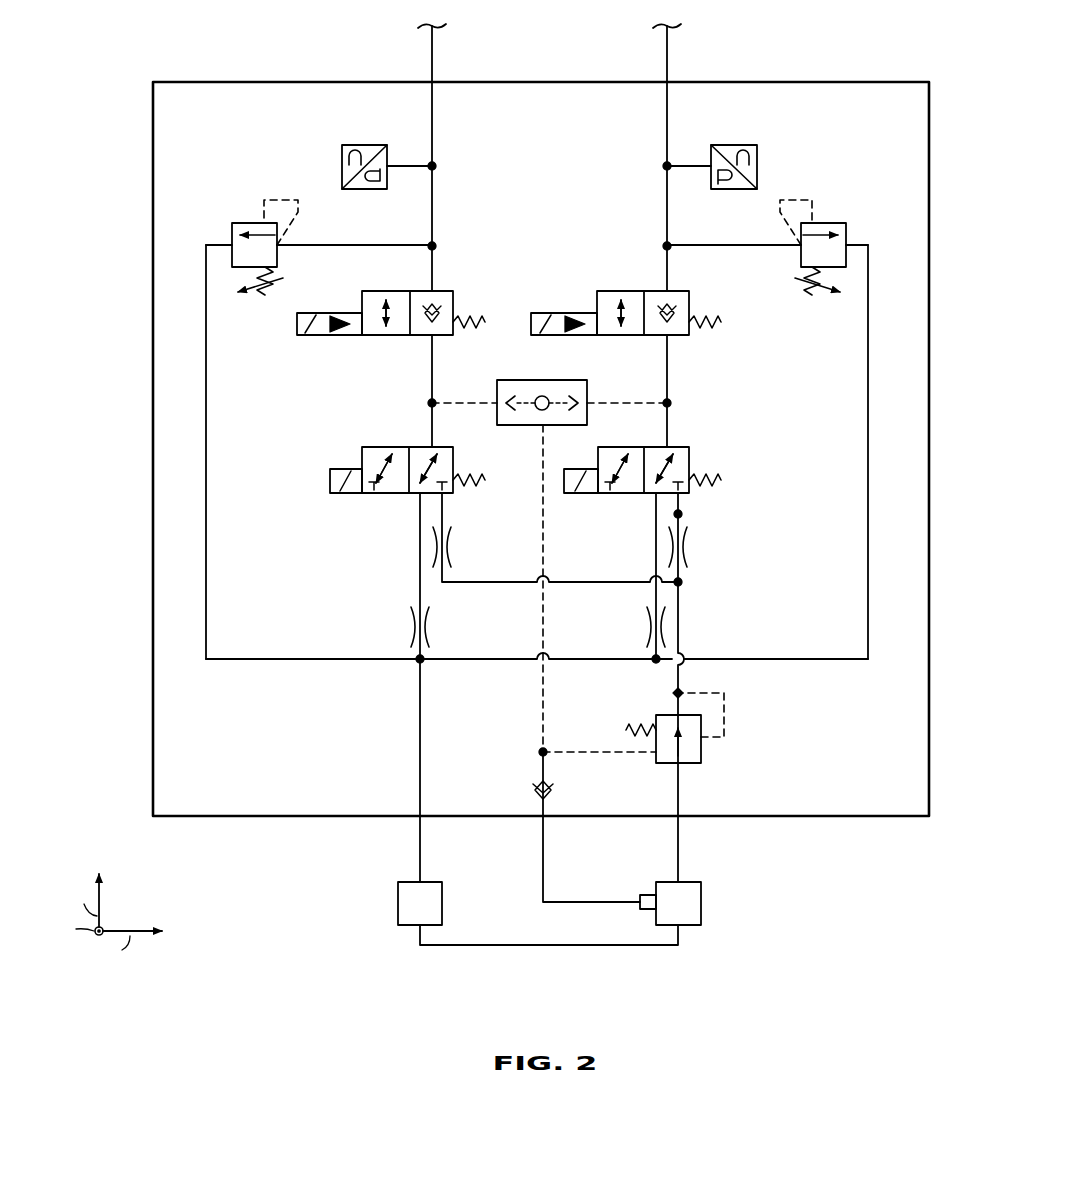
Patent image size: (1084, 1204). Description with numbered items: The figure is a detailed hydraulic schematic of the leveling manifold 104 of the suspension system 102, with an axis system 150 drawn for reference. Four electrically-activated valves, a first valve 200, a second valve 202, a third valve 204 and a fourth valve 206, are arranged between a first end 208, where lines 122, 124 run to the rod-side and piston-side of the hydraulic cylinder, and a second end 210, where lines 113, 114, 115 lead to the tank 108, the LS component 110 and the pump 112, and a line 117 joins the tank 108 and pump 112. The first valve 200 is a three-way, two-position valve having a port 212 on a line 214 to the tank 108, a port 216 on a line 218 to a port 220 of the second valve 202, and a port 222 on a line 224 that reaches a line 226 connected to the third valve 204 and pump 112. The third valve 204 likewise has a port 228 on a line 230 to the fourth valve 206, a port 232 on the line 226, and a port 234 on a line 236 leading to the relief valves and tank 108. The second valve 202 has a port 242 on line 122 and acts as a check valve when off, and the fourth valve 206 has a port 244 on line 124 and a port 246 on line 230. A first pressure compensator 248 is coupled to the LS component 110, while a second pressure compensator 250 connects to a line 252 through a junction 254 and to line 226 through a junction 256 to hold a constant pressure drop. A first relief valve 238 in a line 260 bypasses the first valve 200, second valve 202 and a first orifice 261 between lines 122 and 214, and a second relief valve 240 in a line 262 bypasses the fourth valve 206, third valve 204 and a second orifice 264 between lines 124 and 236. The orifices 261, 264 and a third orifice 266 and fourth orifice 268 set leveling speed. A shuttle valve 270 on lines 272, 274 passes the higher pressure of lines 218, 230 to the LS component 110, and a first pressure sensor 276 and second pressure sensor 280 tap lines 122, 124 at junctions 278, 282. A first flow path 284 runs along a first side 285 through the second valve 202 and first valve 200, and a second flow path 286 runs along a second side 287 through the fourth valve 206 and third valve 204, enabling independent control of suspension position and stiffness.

The suspension system 102 is at (133, 63).
The leveling manifold 104 is at (160, 82).
The tank 108 is at (442, 915).
The LS component 110 is at (646, 910).
The pump 112 is at (701, 915).
The line 113 is at (420, 868).
The line 114 is at (543, 872).
The line 115 is at (678, 870).
The line 117 is at (565, 945).
The line 122 is at (432, 126).
The line 124 is at (667, 124).
The coordinate system 150 is at (136, 903).
The first valve 200 is at (356, 506).
The second valve 202 is at (463, 268).
The third valve 204 is at (739, 464).
The fourth valve 206 is at (596, 268).
The first end 208 is at (600, 46).
The second end 210 is at (326, 920).
The port 212 is at (420, 495).
The line 214 is at (420, 576).
The port 216 is at (430, 446).
The line 218 is at (431, 383).
The port 220 is at (422, 337).
The port 222 is at (442, 495).
The line 224 is at (442, 586).
The line 226 is at (680, 634).
The port 228 is at (668, 446).
The line 230 is at (667, 385).
The port 232 is at (680, 495).
The port 234 is at (656, 495).
The line 236 is at (656, 570).
The first relief valve 238 is at (215, 219).
The second relief valve 240 is at (865, 226).
The port 242 is at (430, 289).
The port 244 is at (667, 289).
The port 246 is at (677, 337).
The first pressure compensator 248 is at (523, 783).
The second pressure compensator 250 is at (735, 729).
The line 252 is at (543, 702).
The junction 254 is at (540, 750).
The junction 256 is at (685, 582).
The line 260 is at (206, 358).
The first orifice 261 is at (404, 620).
The line 262 is at (868, 358).
The second orifice 264 is at (640, 620).
The third orifice 266 is at (466, 545).
The fourth orifice 268 is at (700, 546).
The shuttle valve 270 is at (518, 436).
The line 272 is at (473, 400).
The line 274 is at (605, 400).
The first pressure sensor 276 is at (326, 162).
The junction 278 is at (440, 166).
The second pressure sensor 280 is at (788, 159).
The junction 282 is at (660, 166).
The first flow path 284 is at (407, 136).
The first side 285 is at (385, 63).
The second flow path 286 is at (694, 140).
The second side 287 is at (718, 68).